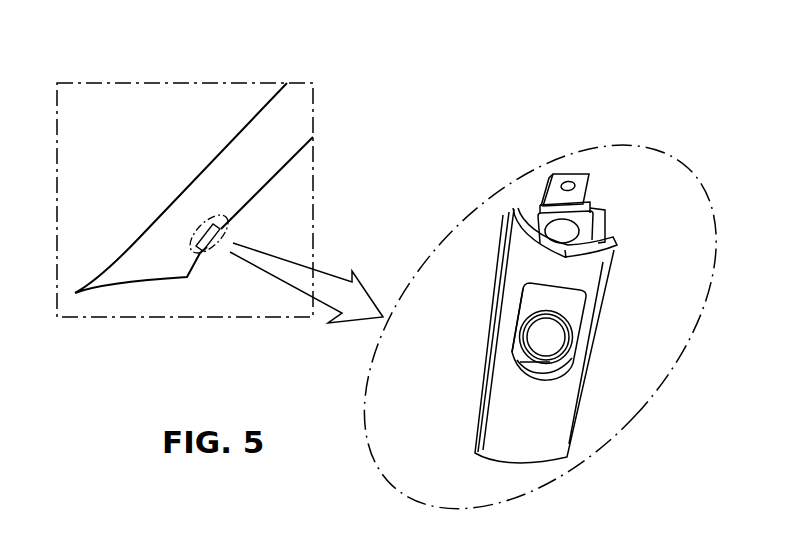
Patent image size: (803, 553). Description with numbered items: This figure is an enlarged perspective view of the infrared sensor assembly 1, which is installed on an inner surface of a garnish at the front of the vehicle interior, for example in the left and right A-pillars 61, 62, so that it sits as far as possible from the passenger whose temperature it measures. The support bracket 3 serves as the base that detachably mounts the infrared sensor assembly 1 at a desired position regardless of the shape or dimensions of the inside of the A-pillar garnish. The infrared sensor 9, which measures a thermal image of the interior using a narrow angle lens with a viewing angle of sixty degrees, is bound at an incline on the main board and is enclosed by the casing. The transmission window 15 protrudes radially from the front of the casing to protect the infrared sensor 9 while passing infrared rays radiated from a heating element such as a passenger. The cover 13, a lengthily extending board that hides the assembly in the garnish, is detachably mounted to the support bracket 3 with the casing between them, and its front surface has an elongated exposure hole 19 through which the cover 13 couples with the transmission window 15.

The infrared sensor assembly 1 is at (613, 190).
The support bracket 3 is at (555, 186).
The infrared sensor 9 is at (546, 342).
The cover 13 is at (530, 433).
The transmission window 15 is at (538, 298).
The exposure hole 19 is at (513, 366).
The left A-pillar 61 is at (233, 170).
The right A-pillar 62 is at (194, 188).